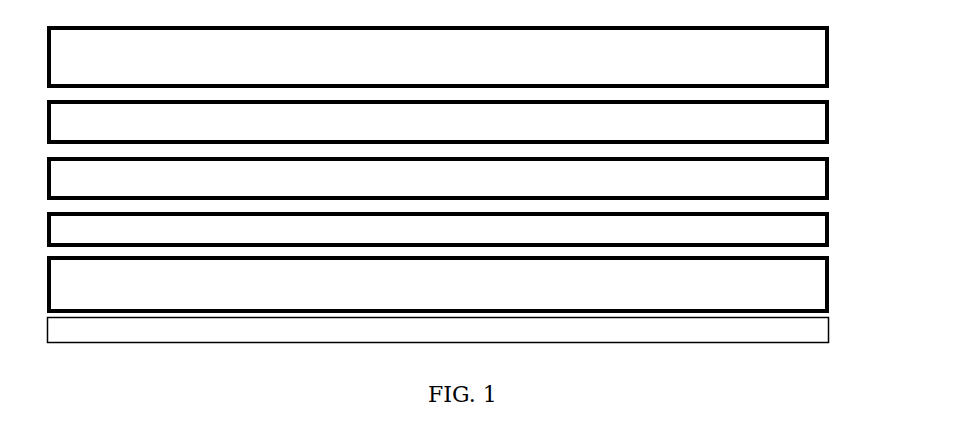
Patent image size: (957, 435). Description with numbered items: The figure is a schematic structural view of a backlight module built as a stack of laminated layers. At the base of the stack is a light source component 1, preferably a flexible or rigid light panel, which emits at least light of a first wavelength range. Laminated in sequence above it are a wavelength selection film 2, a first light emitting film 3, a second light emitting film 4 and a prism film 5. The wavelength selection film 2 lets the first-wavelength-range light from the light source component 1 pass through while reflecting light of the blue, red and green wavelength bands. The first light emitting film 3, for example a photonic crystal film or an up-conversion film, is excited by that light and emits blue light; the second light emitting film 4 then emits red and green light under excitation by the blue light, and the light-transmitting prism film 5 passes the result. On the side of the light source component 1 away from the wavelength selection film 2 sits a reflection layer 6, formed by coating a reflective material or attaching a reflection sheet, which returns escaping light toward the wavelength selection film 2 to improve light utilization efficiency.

The light source component 1 is at (819, 283).
The wavelength selection film 2 is at (819, 238).
The first light emitting film 3 is at (819, 183).
The second light emitting film 4 is at (819, 123).
The prism film 5 is at (819, 63).
The reflection layer 6 is at (819, 333).